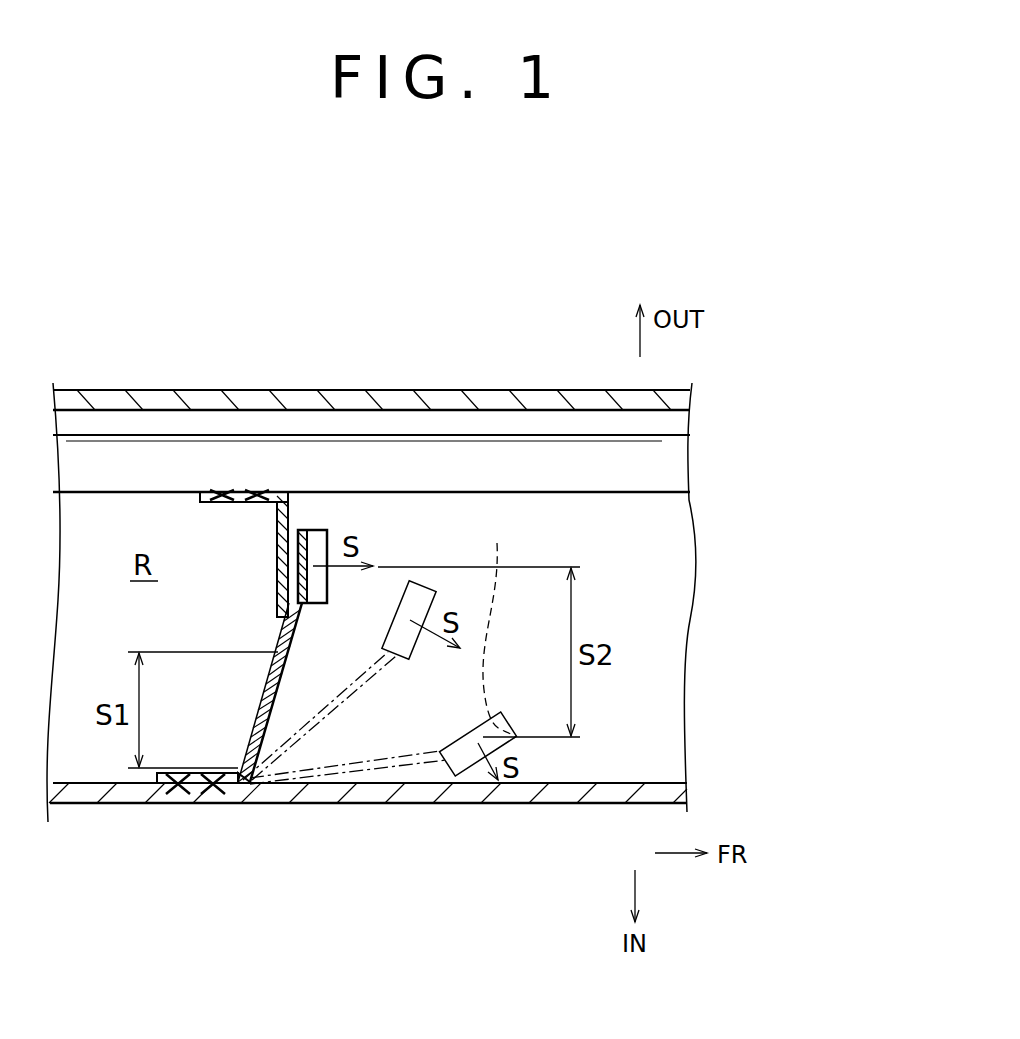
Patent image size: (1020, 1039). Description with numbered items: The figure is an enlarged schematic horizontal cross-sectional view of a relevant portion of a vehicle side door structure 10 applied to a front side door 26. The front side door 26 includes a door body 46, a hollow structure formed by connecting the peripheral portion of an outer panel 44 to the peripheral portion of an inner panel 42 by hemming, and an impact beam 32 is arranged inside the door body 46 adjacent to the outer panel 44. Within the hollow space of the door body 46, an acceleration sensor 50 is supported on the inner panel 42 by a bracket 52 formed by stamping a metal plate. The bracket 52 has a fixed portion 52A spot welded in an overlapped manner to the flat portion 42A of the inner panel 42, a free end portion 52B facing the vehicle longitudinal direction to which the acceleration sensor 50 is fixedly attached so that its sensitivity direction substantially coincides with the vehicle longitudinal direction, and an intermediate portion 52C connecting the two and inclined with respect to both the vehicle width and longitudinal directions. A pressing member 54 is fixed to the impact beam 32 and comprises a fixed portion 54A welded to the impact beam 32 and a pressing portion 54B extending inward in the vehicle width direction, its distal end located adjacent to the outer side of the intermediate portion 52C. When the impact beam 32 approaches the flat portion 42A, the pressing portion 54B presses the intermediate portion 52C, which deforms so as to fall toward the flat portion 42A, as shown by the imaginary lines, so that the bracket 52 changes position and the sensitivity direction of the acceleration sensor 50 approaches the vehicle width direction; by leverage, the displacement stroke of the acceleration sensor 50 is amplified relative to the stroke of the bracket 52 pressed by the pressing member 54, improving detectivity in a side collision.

The vehicle side door structure 10 is at (643, 538).
The impact beam 32 is at (668, 466).
The outer panel 44 is at (480, 400).
The inner panel 42 is at (368, 846).
The flat portion 42A is at (365, 793).
The door body 46 is at (717, 610).
The front side door 26 is at (793, 632).
The acceleration sensor 50 is at (320, 538).
The bracket 52 is at (279, 782).
The fixed portion 52A is at (197, 787).
The free end portion 52B is at (283, 640).
The intermediate portion 52C is at (270, 723).
The pressing member 54 is at (287, 451).
The fixed portion 54A is at (238, 485).
The pressing portion 54B is at (290, 515).